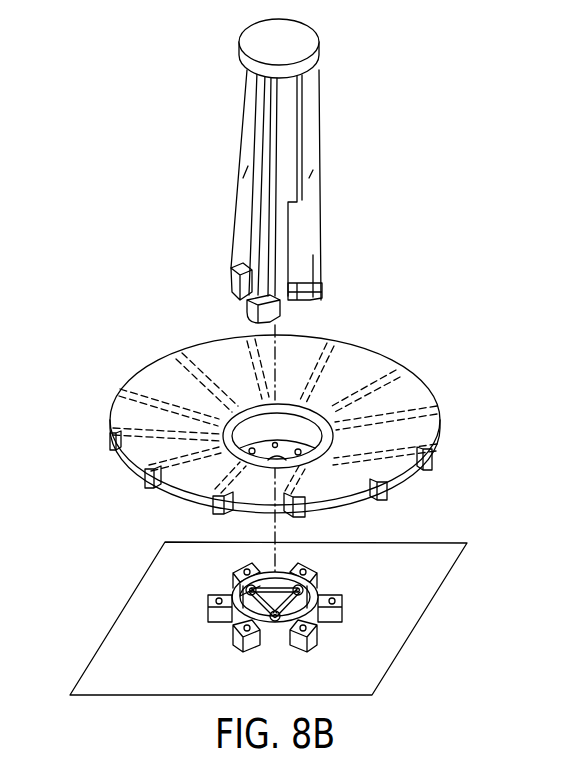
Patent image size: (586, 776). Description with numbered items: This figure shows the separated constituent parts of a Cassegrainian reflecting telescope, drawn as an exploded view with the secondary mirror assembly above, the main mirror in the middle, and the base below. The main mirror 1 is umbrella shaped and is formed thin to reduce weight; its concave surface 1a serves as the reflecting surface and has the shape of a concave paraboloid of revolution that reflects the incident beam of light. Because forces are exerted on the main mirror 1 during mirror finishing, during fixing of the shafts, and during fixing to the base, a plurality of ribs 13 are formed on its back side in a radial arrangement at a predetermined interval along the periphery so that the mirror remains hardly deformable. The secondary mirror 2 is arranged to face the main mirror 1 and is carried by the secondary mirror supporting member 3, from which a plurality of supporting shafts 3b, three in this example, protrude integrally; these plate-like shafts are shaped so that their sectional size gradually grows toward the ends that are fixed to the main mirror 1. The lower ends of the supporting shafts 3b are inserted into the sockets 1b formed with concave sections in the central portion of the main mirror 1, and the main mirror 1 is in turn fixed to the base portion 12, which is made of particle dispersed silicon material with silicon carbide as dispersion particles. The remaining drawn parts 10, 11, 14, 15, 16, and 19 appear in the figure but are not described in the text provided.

The main mirror 1 is at (365, 346).
The concave surface 1a is at (412, 386).
The sockets 1b is at (283, 401).
The secondary mirror 2 is at (306, 44).
The secondary mirror supporting member 3 is at (320, 136).
The supporting shafts 3b is at (263, 183).
The hole floor 10 is at (284, 447).
The base plate 11 is at (426, 612).
The base portion 12 is at (330, 586).
The ribs 13 is at (384, 491).
The pin 14 is at (287, 580).
The block 15 is at (233, 592).
The pin frame 16 is at (268, 590).
The side block 19 is at (207, 598).